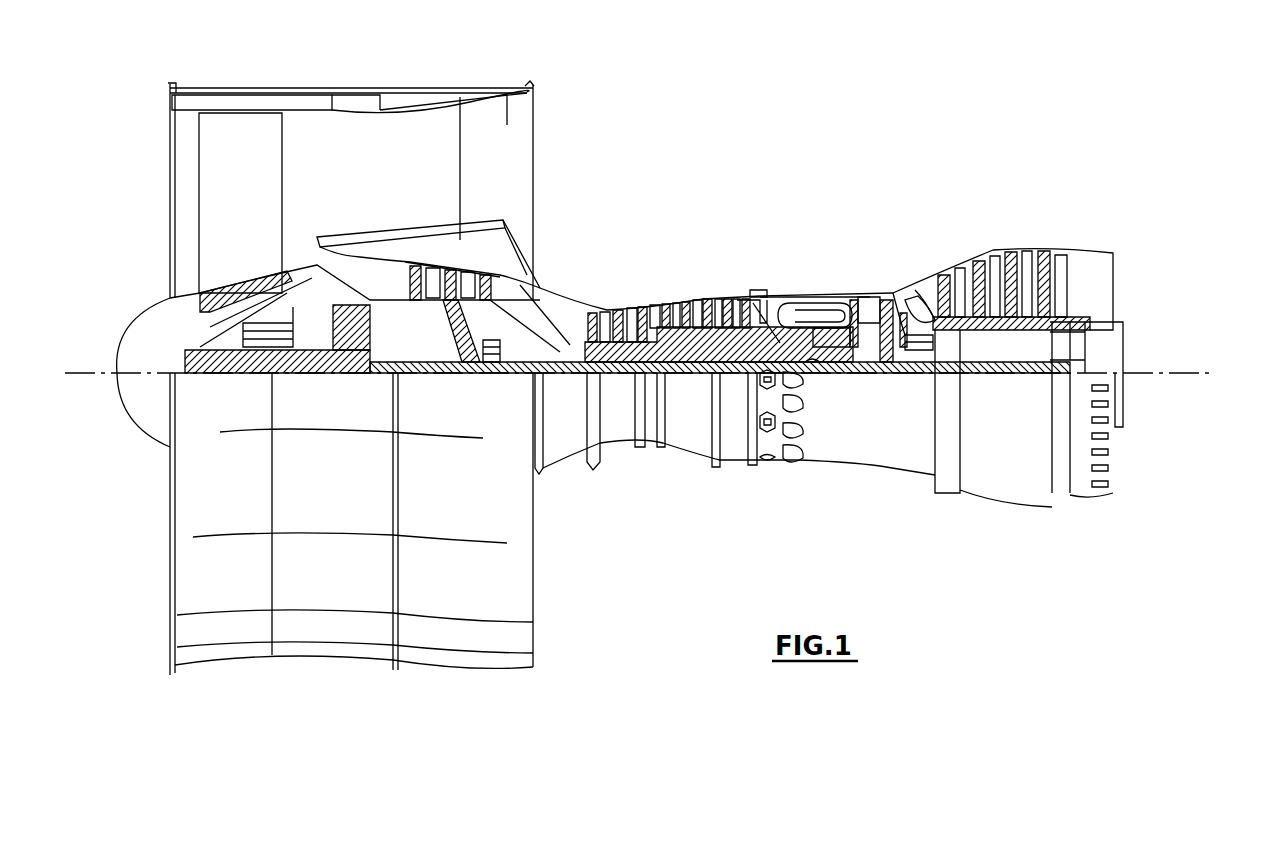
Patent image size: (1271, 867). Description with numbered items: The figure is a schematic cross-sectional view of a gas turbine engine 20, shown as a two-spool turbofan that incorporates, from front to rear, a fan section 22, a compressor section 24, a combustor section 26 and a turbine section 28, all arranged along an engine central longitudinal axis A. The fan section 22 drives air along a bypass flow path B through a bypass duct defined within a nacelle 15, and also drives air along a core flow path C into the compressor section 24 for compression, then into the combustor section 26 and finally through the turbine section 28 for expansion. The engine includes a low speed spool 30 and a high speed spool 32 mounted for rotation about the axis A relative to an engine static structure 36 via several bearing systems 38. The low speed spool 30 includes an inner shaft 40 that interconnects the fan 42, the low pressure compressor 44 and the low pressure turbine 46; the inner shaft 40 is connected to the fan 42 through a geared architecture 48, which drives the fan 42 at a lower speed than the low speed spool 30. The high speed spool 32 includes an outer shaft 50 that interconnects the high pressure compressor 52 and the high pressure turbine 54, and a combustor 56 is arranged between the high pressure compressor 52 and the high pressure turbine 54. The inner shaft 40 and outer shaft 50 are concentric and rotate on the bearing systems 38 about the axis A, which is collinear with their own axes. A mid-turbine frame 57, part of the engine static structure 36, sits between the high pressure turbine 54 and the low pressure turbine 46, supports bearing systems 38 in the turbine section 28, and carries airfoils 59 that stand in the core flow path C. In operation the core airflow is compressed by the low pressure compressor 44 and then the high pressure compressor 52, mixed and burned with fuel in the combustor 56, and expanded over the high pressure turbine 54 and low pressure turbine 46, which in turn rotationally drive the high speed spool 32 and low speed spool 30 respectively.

The nacelle 15 is at (352, 92).
The gas turbine engine 20 is at (814, 140).
The fan section 22 is at (280, 78).
The compressor section 24 is at (585, 278).
The combustor section 26 is at (808, 255).
The turbine section 28 is at (955, 229).
The low speed spool 30 is at (691, 387).
The high speed spool 32 is at (733, 340).
The engine static structure 36 is at (731, 470).
The bearing systems 38 is at (494, 360).
The inner shaft 40 is at (553, 377).
The fan 42 is at (254, 219).
The low pressure compressor 44 is at (453, 280).
The low pressure turbine 46 is at (1000, 243).
The geared architecture 48 is at (352, 355).
The outer shaft 50 is at (813, 373).
The high pressure compressor 52 is at (662, 343).
The high pressure turbine 54 is at (873, 295).
The combustor 56 is at (805, 318).
The mid-turbine frame 57 is at (918, 280).
The airfoils 59 is at (907, 308).
The engine central longitudinal axis A is at (1205, 373).
The bypass flow path B is at (306, 165).
The core flow path C is at (348, 270).